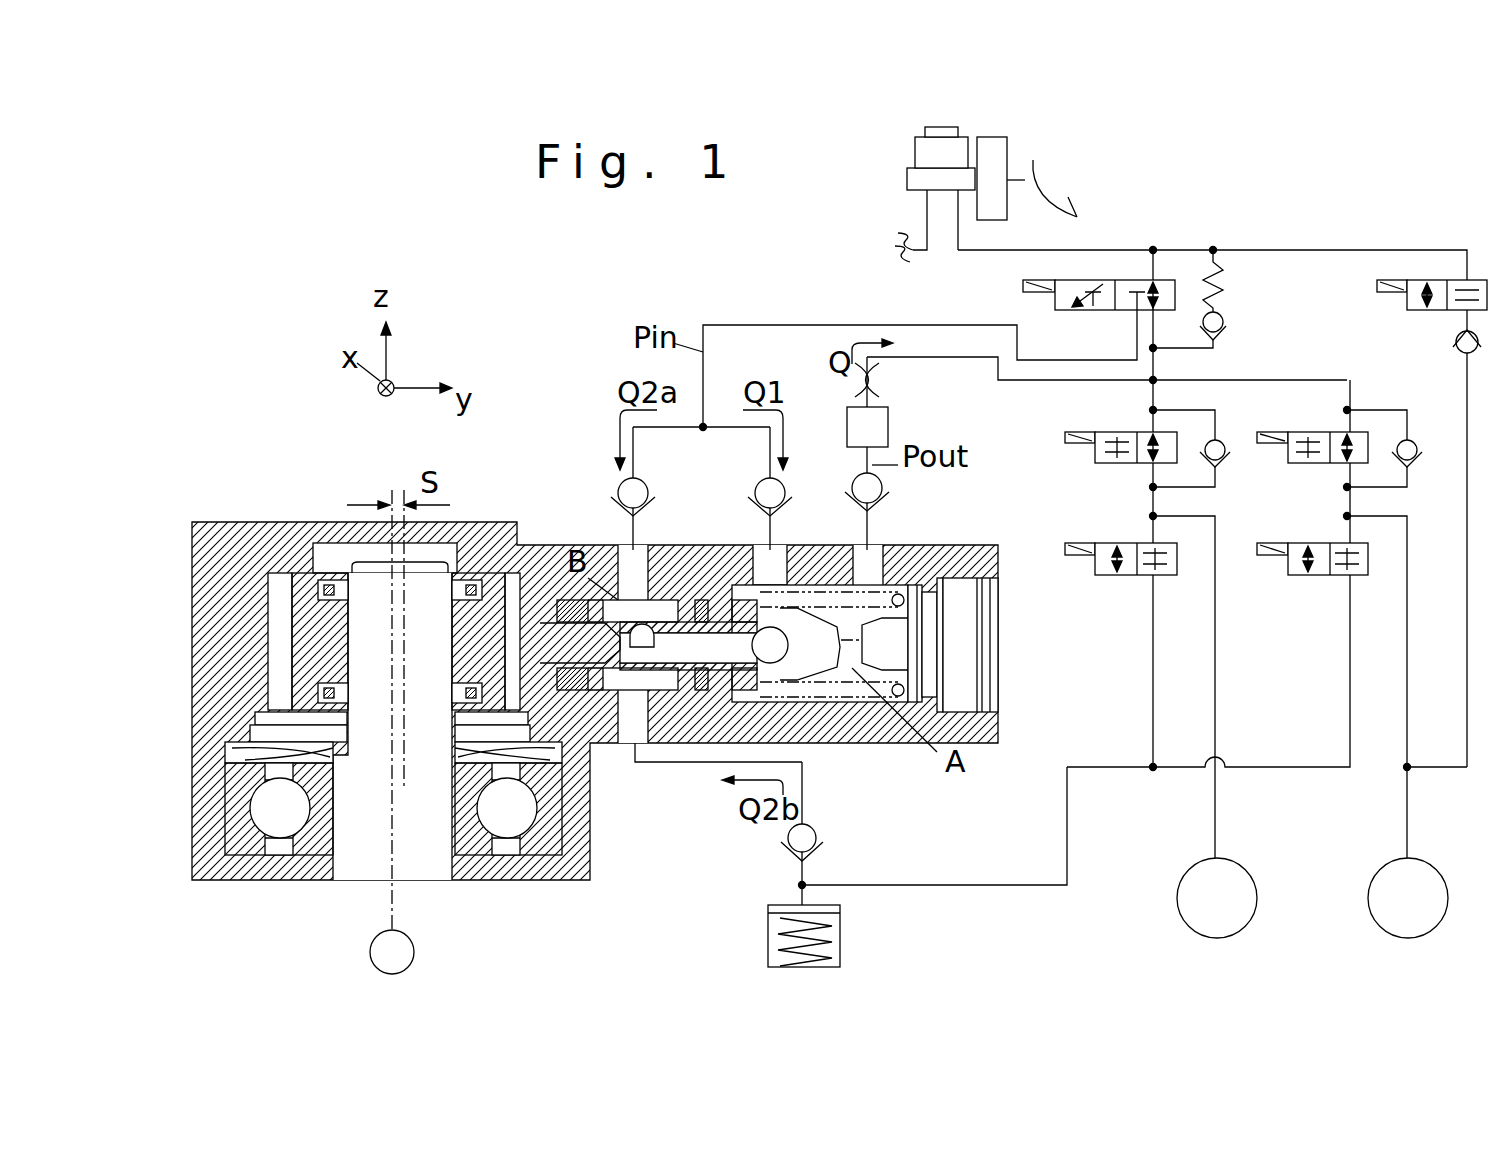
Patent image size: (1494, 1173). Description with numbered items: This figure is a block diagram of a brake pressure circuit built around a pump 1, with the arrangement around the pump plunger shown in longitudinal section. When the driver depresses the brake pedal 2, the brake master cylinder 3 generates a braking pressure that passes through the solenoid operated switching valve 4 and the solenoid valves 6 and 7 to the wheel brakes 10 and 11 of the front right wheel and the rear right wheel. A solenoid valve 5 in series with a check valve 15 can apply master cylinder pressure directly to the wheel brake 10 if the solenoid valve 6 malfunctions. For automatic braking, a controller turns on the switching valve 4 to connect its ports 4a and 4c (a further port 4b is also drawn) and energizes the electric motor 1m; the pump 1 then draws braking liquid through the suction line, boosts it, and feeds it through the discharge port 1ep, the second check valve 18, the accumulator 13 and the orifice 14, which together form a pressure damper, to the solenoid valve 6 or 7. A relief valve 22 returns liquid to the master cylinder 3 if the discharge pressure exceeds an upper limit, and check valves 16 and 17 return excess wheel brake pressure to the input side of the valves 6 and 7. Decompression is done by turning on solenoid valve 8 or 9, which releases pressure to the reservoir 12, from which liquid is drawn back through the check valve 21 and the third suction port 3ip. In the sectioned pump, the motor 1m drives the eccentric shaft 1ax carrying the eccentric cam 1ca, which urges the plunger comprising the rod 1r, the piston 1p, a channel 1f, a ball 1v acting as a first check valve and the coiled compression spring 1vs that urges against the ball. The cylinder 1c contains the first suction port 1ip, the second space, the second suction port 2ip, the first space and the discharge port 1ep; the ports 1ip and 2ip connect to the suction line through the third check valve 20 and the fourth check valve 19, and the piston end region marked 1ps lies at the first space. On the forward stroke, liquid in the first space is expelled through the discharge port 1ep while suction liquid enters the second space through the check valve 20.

The pump 1 is at (628, 870).
The eccentric shaft 1ax is at (362, 588).
The eccentric cam 1ca is at (288, 647).
The rod 1r is at (542, 627).
The electric motor 1m is at (377, 940).
The first suction port 1ip is at (648, 556).
The piston 1p is at (795, 562).
The discharge port 1ep is at (883, 553).
The third suction port 3ip is at (617, 742).
The cylinder 1c is at (843, 707).
The channel 1f is at (665, 652).
The ball 1v is at (767, 655).
The coiled compression spring 1vs is at (802, 663).
The piston / end cap 1ps is at (863, 697).
The brake pedal 2 is at (1043, 192).
The second suction port 2ip is at (772, 553).
The brake master cylinder 3 is at (907, 178).
The solenoid operated switching valve 4 is at (1114, 482).
The port 4a is at (1152, 272).
The valve port 4b is at (1158, 306).
The port 4c is at (1137, 310).
The solenoid valve 5 is at (1423, 313).
The solenoid valve 6 is at (1320, 432).
The solenoid valve 7 is at (1130, 432).
The solenoid valve 8 is at (1320, 543).
The solenoid valve 9 is at (1130, 543).
The wheel brake 10 is at (1437, 863).
The wheel brake 11 is at (1240, 865).
The reservoir 12 is at (768, 930).
The accumulator 13 is at (888, 425).
The orifice 14 is at (877, 384).
The check valve 15 is at (1460, 350).
The check valve 16 is at (1420, 448).
The check valve 17 is at (1227, 462).
The second check valve 18 is at (873, 487).
The fourth check valve 19 is at (753, 487).
The third check valve 20 is at (618, 489).
The fifth check valve 21 is at (790, 850).
The relief valve 22 is at (1228, 318).